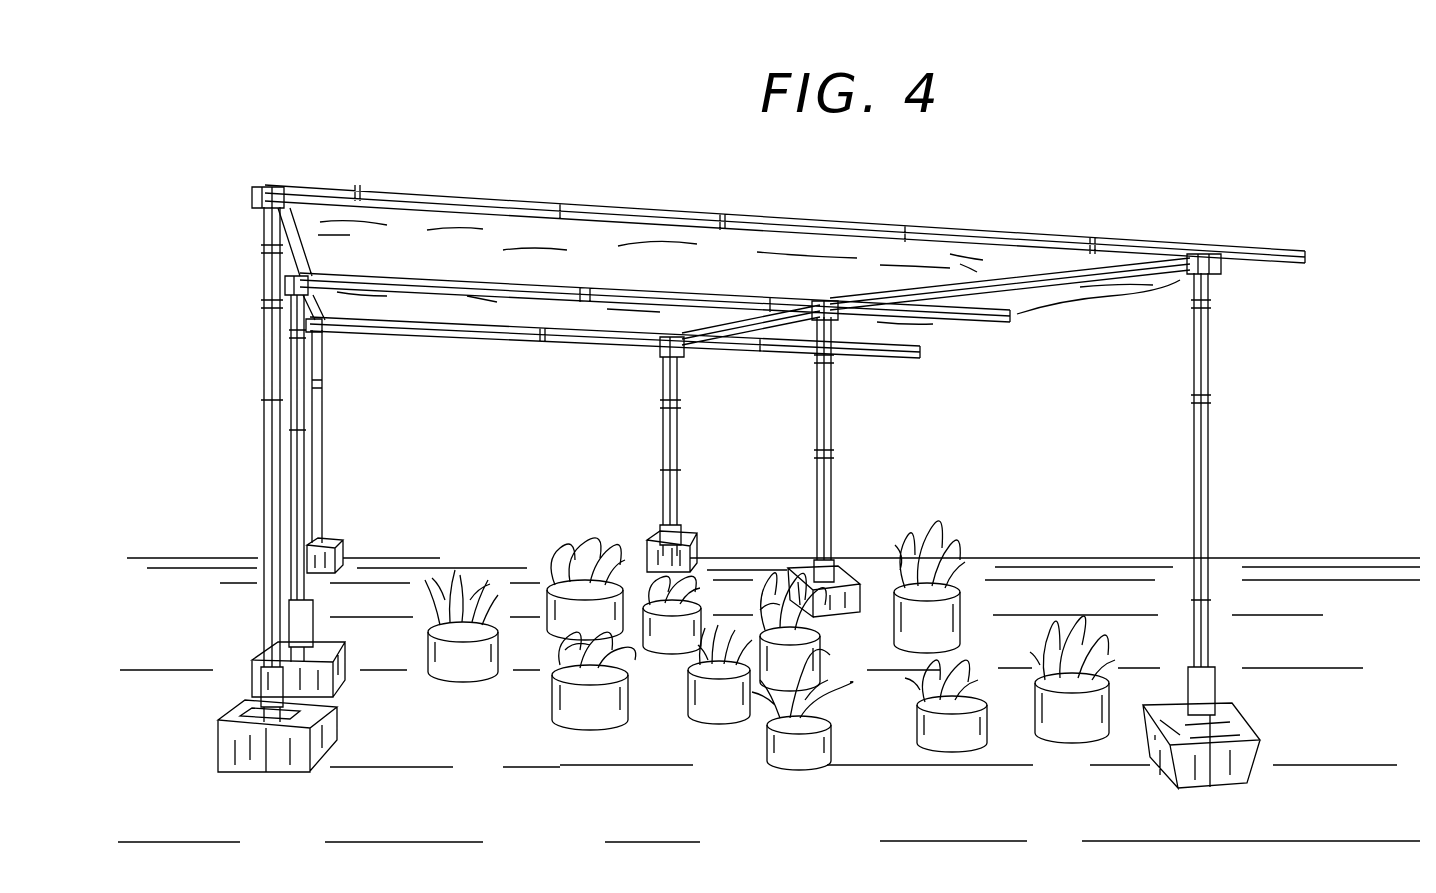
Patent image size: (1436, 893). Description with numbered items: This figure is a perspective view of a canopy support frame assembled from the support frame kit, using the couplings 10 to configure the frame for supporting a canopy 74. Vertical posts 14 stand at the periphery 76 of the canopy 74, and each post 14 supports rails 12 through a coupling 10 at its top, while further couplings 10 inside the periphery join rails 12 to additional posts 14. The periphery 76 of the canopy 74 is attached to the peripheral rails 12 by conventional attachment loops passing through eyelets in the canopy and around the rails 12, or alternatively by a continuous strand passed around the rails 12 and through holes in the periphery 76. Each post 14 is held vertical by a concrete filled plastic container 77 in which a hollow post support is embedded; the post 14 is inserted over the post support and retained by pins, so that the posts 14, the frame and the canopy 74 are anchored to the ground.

The coupling 10 is at (248, 190).
The rail 12 is at (356, 185).
The post 14 is at (298, 392).
The canopy 74 is at (968, 266).
The periphery of the canopy 76 is at (716, 222).
The concrete filled plastic container 77 is at (340, 550).